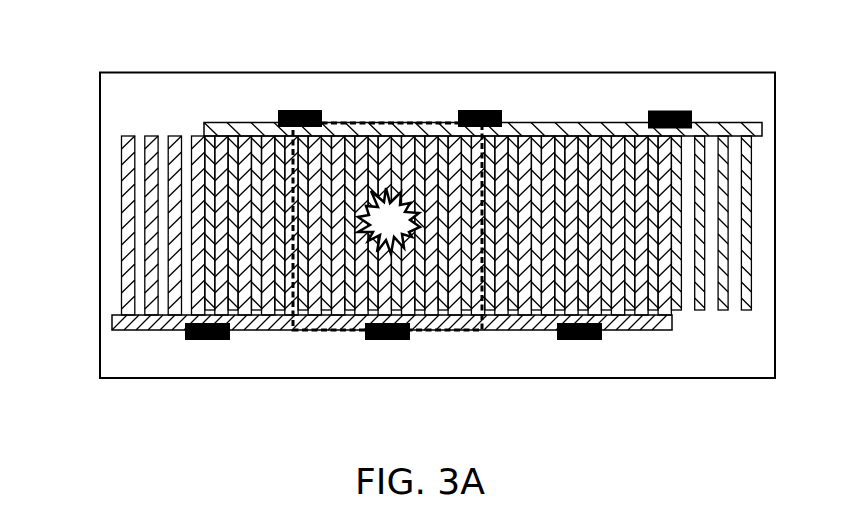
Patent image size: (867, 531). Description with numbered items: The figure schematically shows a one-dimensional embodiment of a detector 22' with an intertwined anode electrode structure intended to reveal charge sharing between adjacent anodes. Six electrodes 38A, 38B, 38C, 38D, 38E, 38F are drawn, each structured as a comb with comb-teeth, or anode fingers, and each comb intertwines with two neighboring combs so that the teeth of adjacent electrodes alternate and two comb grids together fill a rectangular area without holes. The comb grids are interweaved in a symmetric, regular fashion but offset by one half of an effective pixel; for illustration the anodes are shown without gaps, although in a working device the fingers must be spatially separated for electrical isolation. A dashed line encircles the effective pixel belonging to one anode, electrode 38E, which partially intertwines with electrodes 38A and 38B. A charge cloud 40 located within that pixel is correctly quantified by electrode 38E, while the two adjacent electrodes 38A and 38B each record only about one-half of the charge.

The detector 22' is at (407, 192).
The electrode 38A is at (238, 137).
The electrode 38B is at (408, 137).
The electrode 38C is at (600, 135).
The electrode 38D is at (172, 322).
The electrode 38E is at (342, 327).
The electrode 38F is at (523, 322).
The charge cloud 40 is at (397, 210).